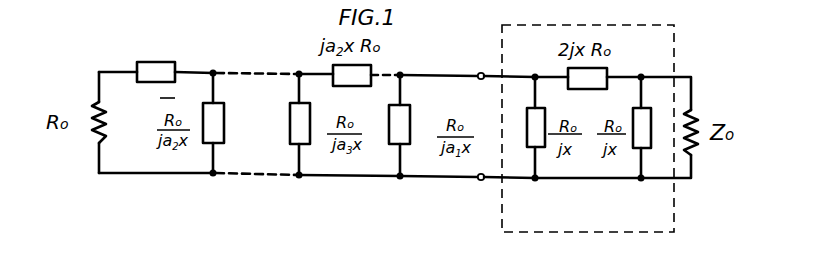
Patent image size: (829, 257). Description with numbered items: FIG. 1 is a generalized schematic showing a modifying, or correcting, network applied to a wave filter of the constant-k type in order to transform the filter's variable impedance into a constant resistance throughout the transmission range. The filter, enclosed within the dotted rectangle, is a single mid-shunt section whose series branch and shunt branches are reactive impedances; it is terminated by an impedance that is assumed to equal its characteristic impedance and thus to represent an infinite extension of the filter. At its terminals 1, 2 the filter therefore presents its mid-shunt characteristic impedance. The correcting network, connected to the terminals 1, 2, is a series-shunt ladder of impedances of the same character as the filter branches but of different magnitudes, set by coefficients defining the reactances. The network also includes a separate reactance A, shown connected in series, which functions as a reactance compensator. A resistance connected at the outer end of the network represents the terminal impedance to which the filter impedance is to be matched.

The filter terminal 1 is at (506, 64).
The filter terminal 2 is at (506, 190).
The reactance compensator A is at (156, 57).